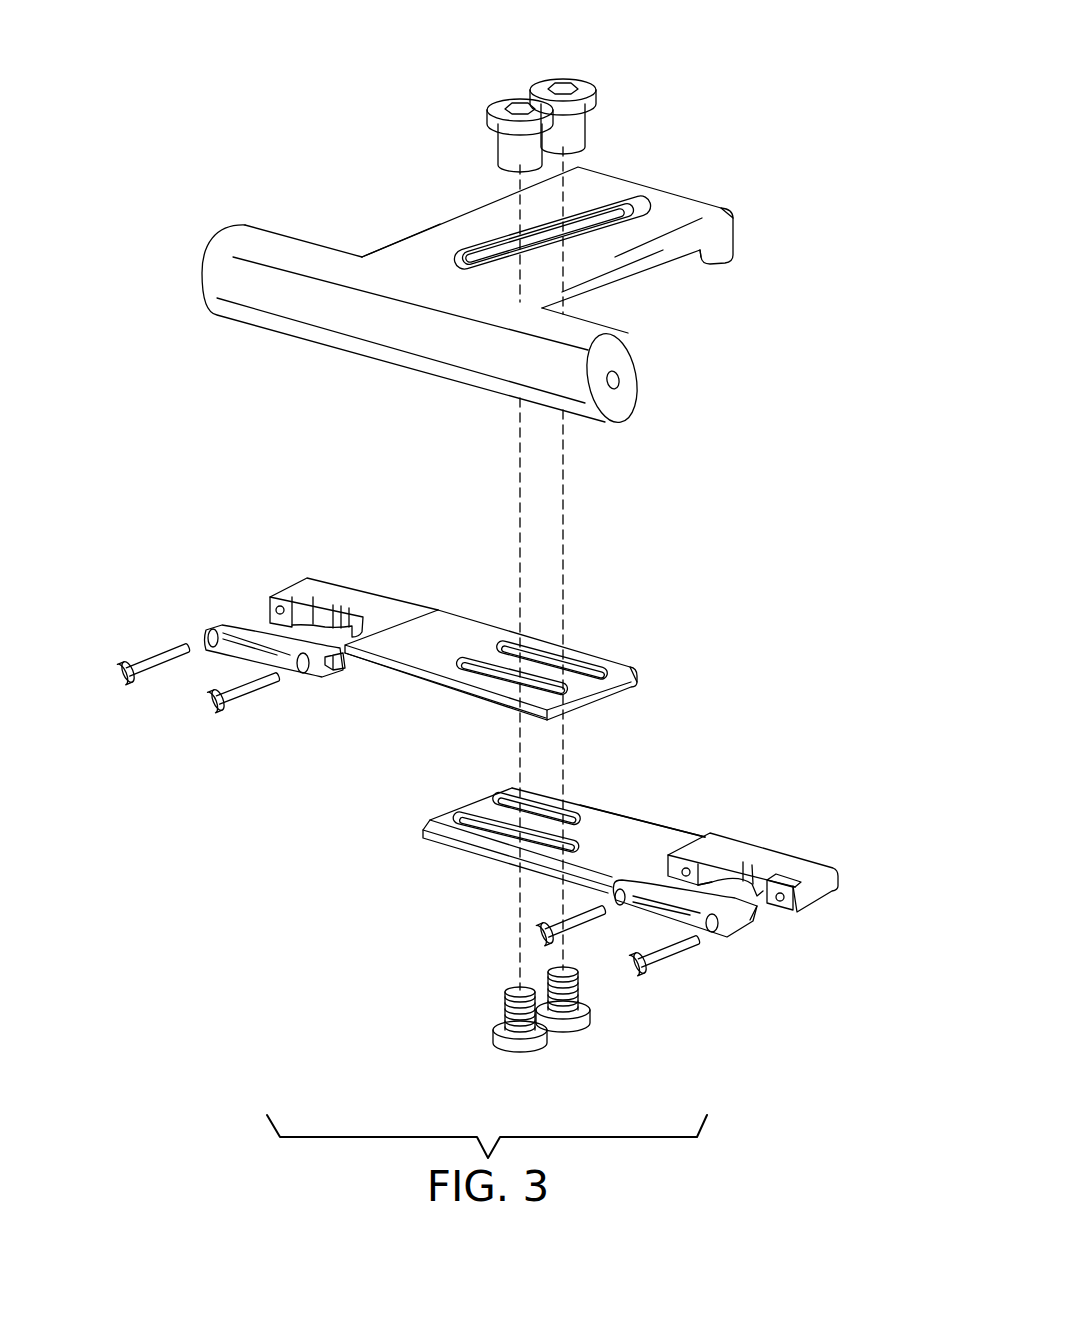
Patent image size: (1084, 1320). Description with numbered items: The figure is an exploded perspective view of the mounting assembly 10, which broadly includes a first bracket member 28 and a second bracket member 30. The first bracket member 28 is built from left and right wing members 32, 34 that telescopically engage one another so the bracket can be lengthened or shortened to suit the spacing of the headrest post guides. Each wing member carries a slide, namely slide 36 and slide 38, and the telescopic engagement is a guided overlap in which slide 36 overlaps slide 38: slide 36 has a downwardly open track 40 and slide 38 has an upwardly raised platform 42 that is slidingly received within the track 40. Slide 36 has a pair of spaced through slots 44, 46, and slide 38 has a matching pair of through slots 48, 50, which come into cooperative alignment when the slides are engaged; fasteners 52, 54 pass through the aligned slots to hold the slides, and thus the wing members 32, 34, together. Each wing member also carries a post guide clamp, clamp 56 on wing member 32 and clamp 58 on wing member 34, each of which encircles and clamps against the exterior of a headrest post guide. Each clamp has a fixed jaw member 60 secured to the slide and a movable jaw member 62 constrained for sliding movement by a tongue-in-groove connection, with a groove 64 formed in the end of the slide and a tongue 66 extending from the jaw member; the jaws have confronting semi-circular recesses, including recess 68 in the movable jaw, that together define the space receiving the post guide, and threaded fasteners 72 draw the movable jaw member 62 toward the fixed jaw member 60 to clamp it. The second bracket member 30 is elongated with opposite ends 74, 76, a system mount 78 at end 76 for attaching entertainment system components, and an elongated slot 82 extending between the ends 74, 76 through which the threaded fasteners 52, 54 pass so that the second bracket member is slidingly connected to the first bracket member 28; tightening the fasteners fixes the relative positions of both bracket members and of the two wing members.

The mounting assembly 10 is at (737, 122).
The first bracket member 28 is at (640, 638).
The second bracket member 30 is at (448, 218).
The left wing member 32 is at (440, 610).
The right wing member 34 is at (737, 832).
The slide 36 is at (445, 694).
The slide 38 is at (487, 851).
The track 40 is at (618, 692).
The platform 42 is at (616, 818).
The through slot 44 is at (510, 680).
The through slot 46 is at (583, 668).
The through slot 48 is at (543, 840).
The through slot 50 is at (556, 806).
The fastener 52 is at (504, 104).
The fastener 54 is at (559, 78).
The post guide clamp 56 is at (322, 592).
The post guide clamp 58 is at (838, 872).
The fixed jaw member 60 is at (357, 604).
The movable jaw member 62 is at (235, 656).
The groove 64 is at (668, 874).
The tongue 66 is at (318, 602).
The semi-circular recess 68 is at (252, 630).
The threaded fastener 72 is at (135, 686).
The end 74 is at (701, 198).
The end 76 is at (406, 238).
The system mount 78 is at (375, 344).
The elongated slot 82 is at (622, 208).